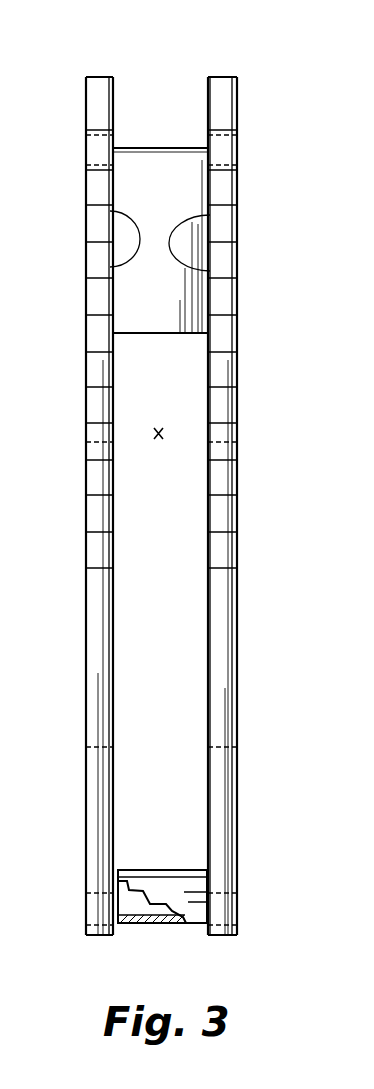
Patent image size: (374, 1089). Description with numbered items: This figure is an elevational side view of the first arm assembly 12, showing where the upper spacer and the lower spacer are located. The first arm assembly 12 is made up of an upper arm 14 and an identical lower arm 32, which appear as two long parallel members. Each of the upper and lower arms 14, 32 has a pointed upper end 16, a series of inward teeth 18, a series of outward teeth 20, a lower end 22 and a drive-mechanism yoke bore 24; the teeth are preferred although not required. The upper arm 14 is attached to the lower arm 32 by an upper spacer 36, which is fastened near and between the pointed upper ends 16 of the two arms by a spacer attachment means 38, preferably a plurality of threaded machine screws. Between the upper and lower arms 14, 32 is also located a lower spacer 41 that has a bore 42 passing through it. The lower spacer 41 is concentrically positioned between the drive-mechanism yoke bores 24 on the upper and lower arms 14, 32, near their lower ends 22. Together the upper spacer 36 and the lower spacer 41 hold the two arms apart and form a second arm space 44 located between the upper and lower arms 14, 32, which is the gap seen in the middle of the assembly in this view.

The first arm assembly 12 is at (308, 48).
The upper arm 14 is at (237, 261).
The pointed upper ends 16 is at (242, 85).
The inward teeth 18 is at (90, 141).
The outward teeth 20 is at (101, 313).
The lower end 22 is at (88, 928).
The drive-mechanism yoke bore 24 is at (100, 895).
The lower arm 32 is at (86, 375).
The upper spacer 36 is at (173, 188).
The spacer attachment means 38 is at (113, 214).
The lower spacer 41 is at (168, 876).
The bore 42 is at (145, 907).
The second arm space 44 is at (170, 424).